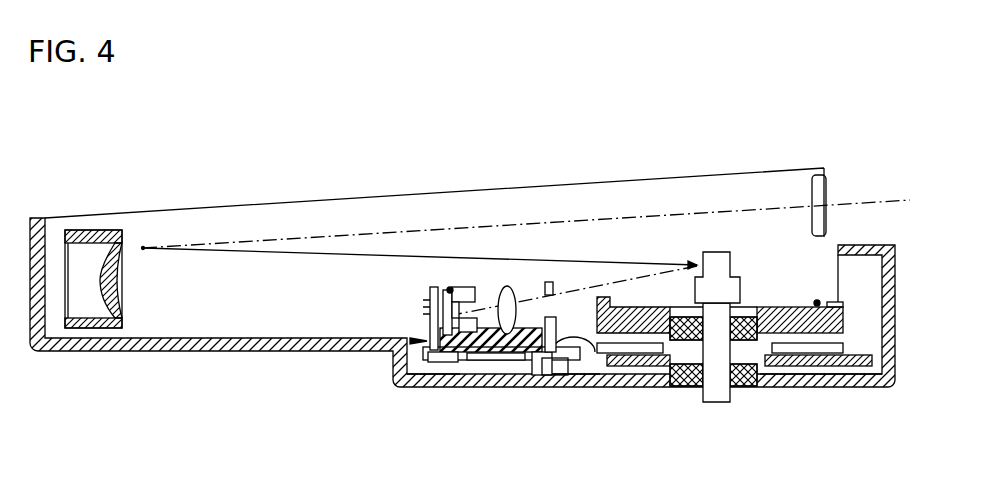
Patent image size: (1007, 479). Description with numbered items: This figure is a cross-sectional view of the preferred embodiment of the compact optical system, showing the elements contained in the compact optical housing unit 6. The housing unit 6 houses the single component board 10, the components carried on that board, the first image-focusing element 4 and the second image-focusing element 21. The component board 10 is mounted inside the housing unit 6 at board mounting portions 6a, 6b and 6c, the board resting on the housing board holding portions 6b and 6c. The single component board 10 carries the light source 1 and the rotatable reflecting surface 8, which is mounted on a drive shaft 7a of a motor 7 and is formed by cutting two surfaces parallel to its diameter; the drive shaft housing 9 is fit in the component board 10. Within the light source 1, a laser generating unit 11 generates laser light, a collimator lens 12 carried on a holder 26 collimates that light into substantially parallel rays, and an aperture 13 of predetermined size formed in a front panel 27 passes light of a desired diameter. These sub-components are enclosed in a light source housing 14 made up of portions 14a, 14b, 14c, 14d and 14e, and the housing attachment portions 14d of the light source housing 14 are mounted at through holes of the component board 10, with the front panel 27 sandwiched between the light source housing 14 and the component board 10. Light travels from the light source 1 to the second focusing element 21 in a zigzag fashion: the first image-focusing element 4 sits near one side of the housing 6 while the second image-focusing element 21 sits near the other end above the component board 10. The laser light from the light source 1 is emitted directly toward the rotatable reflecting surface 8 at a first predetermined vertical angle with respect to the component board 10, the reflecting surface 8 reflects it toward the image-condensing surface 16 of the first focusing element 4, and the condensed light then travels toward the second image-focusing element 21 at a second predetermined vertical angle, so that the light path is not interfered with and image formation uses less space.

The light source 1 is at (393, 355).
The first image-focusing element 4 is at (85, 232).
The compact optical housing unit 6 is at (197, 351).
The board mounting portion 6a is at (770, 390).
The board mounting portion 6b is at (570, 375).
The board mounting portion 6c is at (442, 387).
The motor 7 is at (817, 303).
The drive shaft 7a is at (713, 392).
The rotatable reflecting surface 8 is at (718, 253).
The drive shaft housing 9 is at (762, 385).
The single component board 10 is at (830, 368).
The laser generating unit 11 is at (453, 291).
The collimator lens 12 is at (517, 318).
The aperture 13 is at (550, 314).
The light source housing 14 is at (408, 373).
The light source housing portion 14a is at (500, 330).
The light source housing portion 14b is at (498, 390).
The light source housing portion 14c is at (443, 289).
The housing attachment portion 14d is at (463, 388).
The light source housing portion 14e is at (482, 303).
The image-condensing surface 16 is at (117, 277).
The second image-focusing element 21 is at (813, 193).
The holder 26 is at (548, 282).
The front panel 27 is at (560, 343).